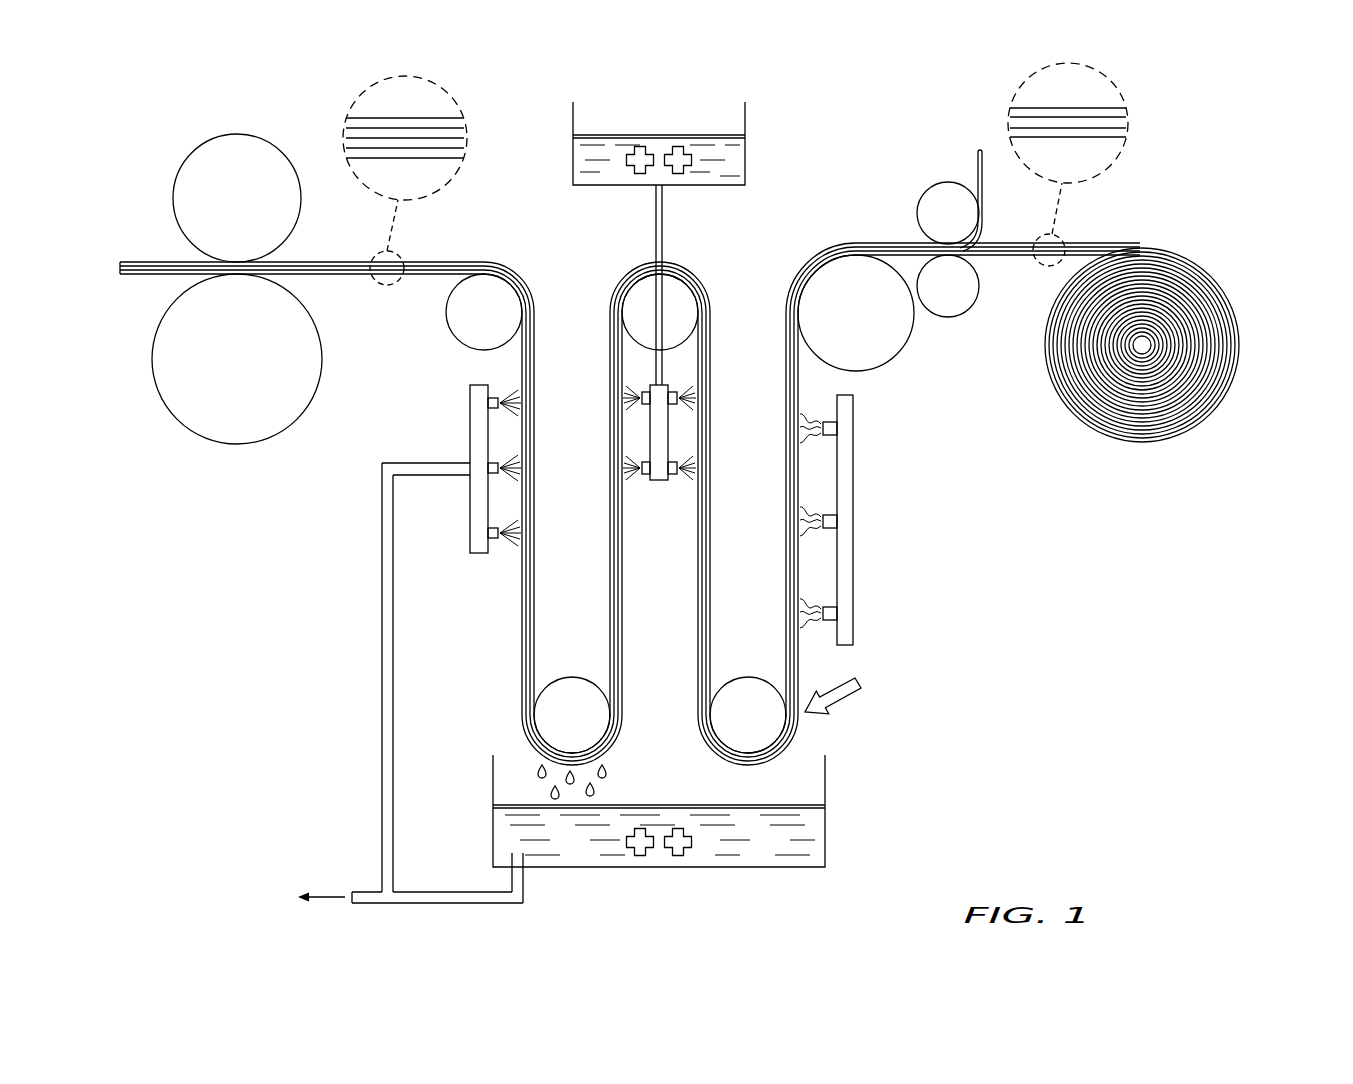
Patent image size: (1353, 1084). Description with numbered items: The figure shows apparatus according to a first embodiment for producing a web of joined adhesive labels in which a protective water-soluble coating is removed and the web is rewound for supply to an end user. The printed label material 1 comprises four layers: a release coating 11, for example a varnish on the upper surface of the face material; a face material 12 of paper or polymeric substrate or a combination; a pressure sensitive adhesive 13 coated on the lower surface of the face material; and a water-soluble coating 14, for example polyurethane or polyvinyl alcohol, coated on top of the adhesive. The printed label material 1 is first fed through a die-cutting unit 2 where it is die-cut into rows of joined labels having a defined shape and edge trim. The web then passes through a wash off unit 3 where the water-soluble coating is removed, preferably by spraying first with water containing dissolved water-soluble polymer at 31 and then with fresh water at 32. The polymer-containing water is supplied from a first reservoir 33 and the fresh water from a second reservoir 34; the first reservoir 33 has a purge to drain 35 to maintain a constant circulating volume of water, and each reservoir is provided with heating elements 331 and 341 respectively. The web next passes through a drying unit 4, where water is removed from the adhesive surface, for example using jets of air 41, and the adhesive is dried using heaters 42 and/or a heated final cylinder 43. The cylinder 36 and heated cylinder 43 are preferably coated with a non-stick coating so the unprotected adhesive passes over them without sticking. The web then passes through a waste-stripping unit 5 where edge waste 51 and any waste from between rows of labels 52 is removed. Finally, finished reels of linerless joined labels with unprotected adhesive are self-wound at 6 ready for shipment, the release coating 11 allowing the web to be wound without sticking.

The printed label material 1 is at (138, 252).
The release coating 11 is at (423, 120).
The face material 12 is at (450, 128).
The pressure sensitive adhesive 13 is at (458, 145).
The water-soluble coating 14 is at (455, 160).
The die-cutting unit 2 is at (238, 445).
The wash off unit 3 is at (440, 398).
The spraying with water containing dissolved water-soluble polymer 31 is at (513, 545).
The spraying with fresh water 32 is at (688, 480).
The first reservoir 33 is at (492, 770).
The heating elements 331 is at (678, 858).
The second reservoir 34 is at (745, 148).
The heating elements 341 is at (678, 147).
The purge to drain 35 is at (360, 906).
The cylinder 36 is at (686, 295).
The drying unit 4 is at (900, 487).
The jets of air 41 is at (862, 683).
The heaters 42 is at (836, 528).
The heated final cylinder 43 is at (897, 355).
The waste-stripping unit 5 is at (975, 298).
The edge waste 51 is at (978, 165).
The waste from between rows of labels 52 is at (971, 200).
The self-wound finished reels 6 is at (1245, 345).